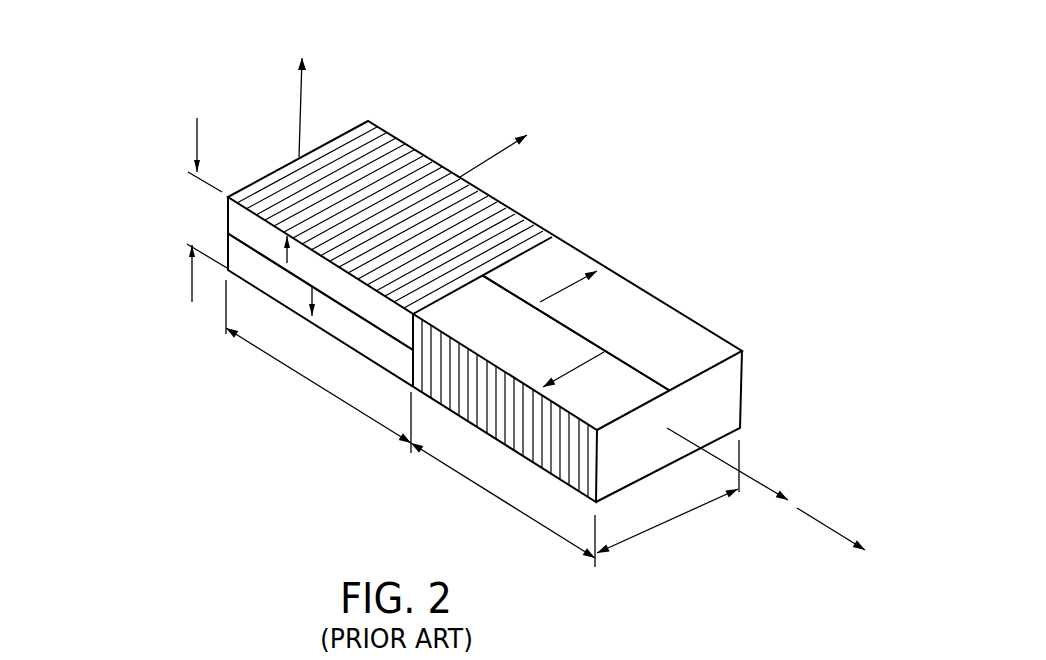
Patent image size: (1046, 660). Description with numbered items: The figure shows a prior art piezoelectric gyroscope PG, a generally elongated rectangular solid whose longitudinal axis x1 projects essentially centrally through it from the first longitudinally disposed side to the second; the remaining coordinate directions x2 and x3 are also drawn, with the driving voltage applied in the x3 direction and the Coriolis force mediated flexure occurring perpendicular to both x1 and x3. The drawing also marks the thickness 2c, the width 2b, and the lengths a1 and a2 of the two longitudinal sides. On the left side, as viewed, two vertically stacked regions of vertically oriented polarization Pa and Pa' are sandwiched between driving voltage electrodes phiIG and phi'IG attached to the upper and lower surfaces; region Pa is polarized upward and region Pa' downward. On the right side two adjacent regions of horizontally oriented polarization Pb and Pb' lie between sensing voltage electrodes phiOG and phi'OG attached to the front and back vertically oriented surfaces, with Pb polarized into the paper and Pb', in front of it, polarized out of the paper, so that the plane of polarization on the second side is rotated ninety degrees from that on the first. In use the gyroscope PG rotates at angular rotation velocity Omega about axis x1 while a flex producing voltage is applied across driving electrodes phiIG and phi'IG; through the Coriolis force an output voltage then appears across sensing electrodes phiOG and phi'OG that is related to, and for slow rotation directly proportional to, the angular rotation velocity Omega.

The piezoelectric gyroscope PG is at (628, 160).
The driving voltage electrode phiIG is at (285, 173).
The driving voltage electrode phi'IG is at (215, 292).
The sensing voltage electrode phiOG is at (687, 328).
The sensing voltage electrode phi'OG is at (394, 421).
The longitudinally oriented axis x1 is at (742, 464).
The x2 direction x2 is at (505, 145).
The x3 direction x3 is at (313, 93).
The angular rotation velocity Omega is at (839, 530).
The thickness dimension 2c is at (203, 210).
The width dimension 2b is at (668, 496).
The length of first side a1 is at (318, 366).
The length of second side a2 is at (503, 505).
The vertically oriented polarization direction Pa is at (273, 245).
The vertically oriented polarization direction Pa' is at (329, 312).
The horizontally oriented polarization direction Pb is at (561, 281).
The horizontally oriented polarization direction Pb' is at (578, 379).